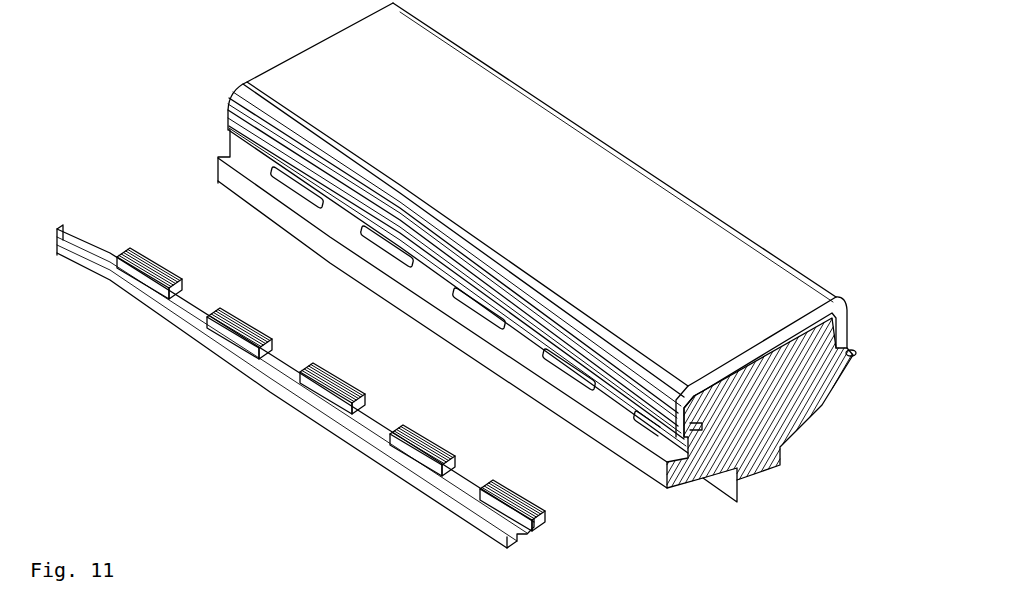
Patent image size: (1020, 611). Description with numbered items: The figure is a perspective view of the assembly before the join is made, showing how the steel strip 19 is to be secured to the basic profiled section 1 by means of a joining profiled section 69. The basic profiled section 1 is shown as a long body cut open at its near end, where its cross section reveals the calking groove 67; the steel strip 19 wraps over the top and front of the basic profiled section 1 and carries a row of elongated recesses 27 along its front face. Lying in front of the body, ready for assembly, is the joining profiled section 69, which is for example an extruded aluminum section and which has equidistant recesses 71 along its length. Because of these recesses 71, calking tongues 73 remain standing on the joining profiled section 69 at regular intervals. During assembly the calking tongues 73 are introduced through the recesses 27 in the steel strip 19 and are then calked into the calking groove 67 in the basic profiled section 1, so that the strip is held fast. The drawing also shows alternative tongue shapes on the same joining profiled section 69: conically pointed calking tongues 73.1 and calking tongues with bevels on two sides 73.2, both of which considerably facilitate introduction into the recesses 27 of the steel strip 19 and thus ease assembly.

The basic profiled section 1 is at (756, 440).
The steel strip 19 is at (519, 178).
The recesses 27 is at (300, 186).
The calking groove 67 is at (853, 352).
The joining profiled section 69 is at (253, 370).
The recesses 71 is at (194, 302).
The calking tongues 73 is at (258, 347).
The conically pointed calking tongues 73.1 is at (417, 442).
The calking tongues with bevels on two sides 73.2 is at (498, 497).